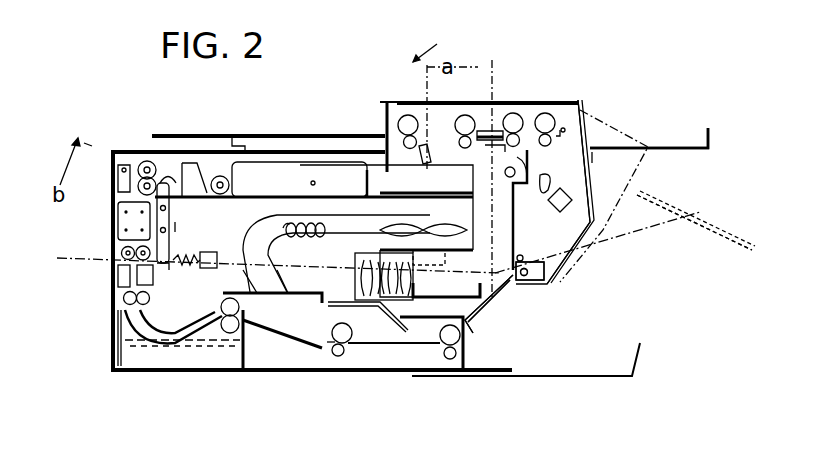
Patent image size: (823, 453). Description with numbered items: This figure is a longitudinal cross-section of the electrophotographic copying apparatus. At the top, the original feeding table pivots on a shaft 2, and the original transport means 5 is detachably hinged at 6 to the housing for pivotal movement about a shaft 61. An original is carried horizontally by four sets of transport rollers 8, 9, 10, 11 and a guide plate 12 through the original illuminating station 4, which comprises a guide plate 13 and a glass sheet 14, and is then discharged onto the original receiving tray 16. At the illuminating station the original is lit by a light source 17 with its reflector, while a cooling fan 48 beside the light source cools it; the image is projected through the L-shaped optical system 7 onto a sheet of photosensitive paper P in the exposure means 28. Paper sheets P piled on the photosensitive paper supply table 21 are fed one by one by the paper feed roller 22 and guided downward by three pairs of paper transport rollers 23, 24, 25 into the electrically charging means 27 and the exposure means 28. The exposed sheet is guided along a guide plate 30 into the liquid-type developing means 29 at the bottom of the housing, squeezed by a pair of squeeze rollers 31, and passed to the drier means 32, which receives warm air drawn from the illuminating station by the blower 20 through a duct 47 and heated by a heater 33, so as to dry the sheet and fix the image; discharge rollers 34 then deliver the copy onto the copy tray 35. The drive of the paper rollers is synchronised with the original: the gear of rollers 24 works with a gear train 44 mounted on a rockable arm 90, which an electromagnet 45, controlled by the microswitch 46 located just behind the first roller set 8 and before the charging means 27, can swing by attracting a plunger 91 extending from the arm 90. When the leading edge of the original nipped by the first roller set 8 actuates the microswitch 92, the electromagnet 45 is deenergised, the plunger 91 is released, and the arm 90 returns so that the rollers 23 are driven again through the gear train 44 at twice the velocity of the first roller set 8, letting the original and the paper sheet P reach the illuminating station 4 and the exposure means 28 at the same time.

The shaft 2 is at (113, 152).
The original illuminating station 4 is at (492, 130).
The original transport means 5 is at (587, 130).
The hinge 6 is at (537, 280).
The optical system 7 is at (352, 258).
The first roller set 8 is at (407, 118).
The second roller set 9 is at (452, 115).
The third set of transport rollers 10 is at (518, 114).
The fourth set of transport rollers 11 is at (548, 114).
The guide plate 12 is at (428, 148).
The guide plate 13 is at (490, 157).
The glass sheet 14 is at (498, 155).
The original receiving tray 16 is at (682, 137).
The light source 17 is at (528, 163).
The blower 20 is at (453, 227).
The photosensitive paper supply table 21 is at (278, 180).
The paper feed roller 22 is at (230, 185).
The paper transport rollers 23 is at (145, 160).
The paper transport rollers 24 is at (122, 253).
The paper transport rollers 25 is at (125, 298).
The electrically charging means 27 is at (122, 230).
The exposure means 28 is at (140, 268).
The liquid-type developing means 29 is at (167, 355).
The guide plate 30 is at (278, 330).
The squeeze rollers 31 is at (228, 136).
The drier means 32 is at (382, 330).
The heater 33 is at (325, 230).
The discharge rollers 34 is at (338, 357).
The copy tray 35 is at (585, 355).
The gear train 44 is at (180, 232).
The electromagnet 45 is at (208, 268).
The microswitch 46 is at (118, 183).
The duct 47 is at (313, 220).
The cooling fan 48 is at (568, 192).
The shaft 61 is at (525, 278).
The rockable arm 90 is at (157, 228).
The plunger 91 is at (170, 268).
The microswitch 92 is at (430, 160).
The photosensitive paper sheet P is at (337, 177).